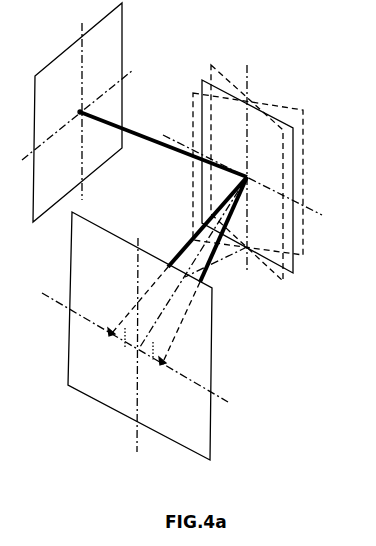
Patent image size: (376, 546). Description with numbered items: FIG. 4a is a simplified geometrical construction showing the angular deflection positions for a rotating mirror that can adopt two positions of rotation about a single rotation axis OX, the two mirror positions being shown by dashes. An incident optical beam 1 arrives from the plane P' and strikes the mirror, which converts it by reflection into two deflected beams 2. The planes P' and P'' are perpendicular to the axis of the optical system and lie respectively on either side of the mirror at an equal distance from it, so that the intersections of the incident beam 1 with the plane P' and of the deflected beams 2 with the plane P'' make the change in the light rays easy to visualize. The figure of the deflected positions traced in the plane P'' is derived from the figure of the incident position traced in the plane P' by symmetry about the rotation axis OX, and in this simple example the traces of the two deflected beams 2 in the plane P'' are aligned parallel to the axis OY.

The incident beam 1 is at (138, 147).
The deflected beams 2 is at (217, 267).
The plane P' is at (77, 112).
The plane P" P'' is at (135, 336).
The rotation axis OX is at (264, 168).
The axis OY is at (257, 184).